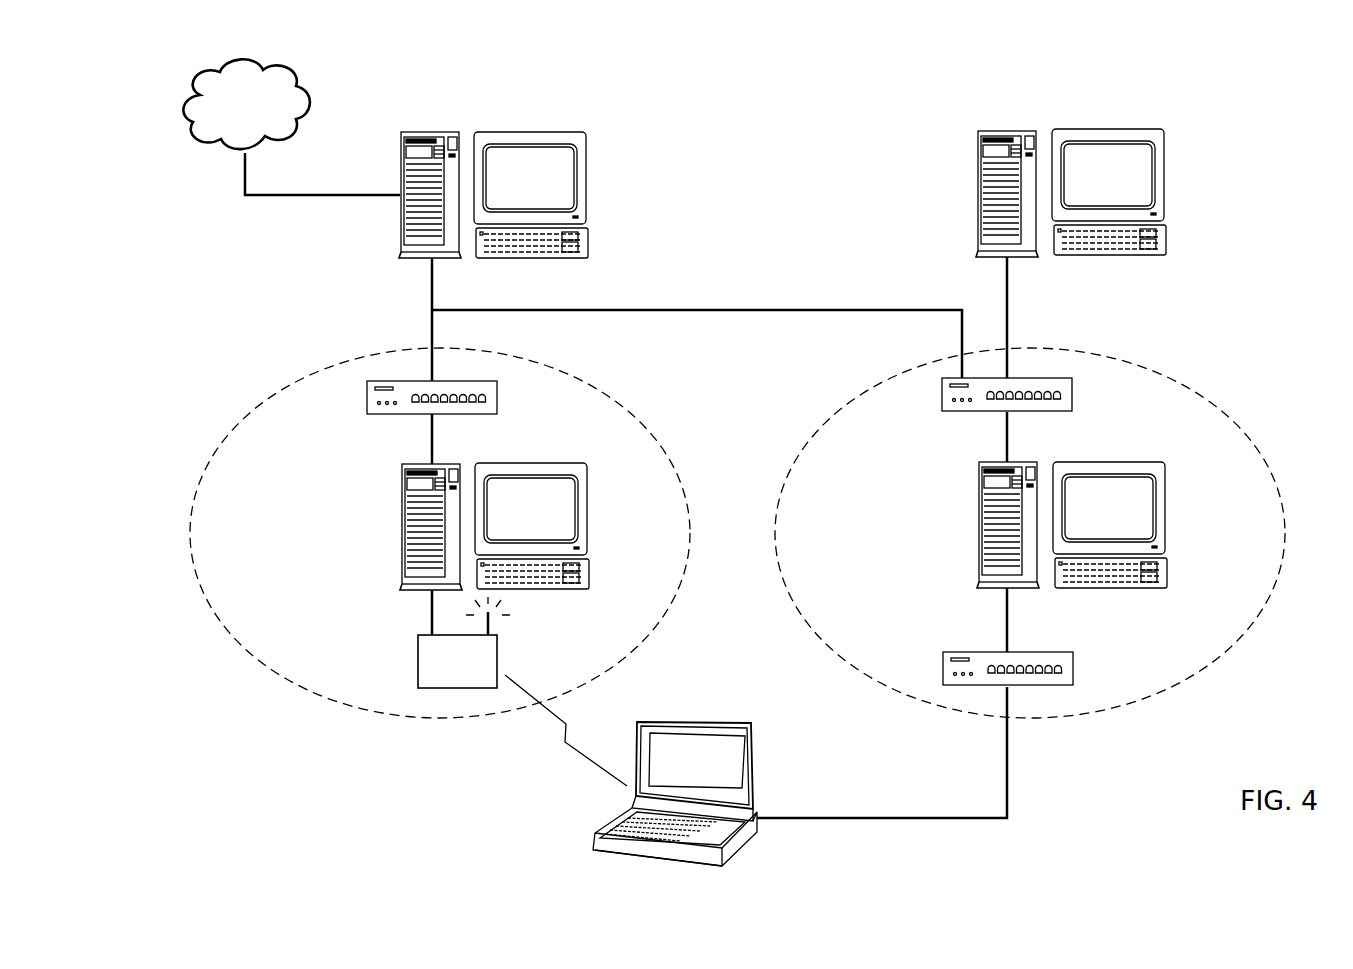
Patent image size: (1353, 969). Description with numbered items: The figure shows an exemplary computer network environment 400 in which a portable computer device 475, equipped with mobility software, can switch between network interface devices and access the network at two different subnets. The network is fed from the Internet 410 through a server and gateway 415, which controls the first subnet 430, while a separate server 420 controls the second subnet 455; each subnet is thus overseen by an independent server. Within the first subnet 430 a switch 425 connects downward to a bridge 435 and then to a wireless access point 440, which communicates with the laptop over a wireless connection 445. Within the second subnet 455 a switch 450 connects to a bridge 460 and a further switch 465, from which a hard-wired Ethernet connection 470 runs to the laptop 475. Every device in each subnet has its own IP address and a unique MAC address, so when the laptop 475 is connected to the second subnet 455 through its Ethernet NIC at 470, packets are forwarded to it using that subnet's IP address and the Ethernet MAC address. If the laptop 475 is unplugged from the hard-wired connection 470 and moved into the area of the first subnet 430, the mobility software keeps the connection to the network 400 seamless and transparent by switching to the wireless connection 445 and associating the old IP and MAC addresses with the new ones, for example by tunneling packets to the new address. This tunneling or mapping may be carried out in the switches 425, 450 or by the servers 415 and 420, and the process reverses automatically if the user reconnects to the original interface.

The computer network environment 400 is at (1248, 106).
The Internet 410 is at (305, 86).
The server and gateway 415 is at (398, 225).
The server 420 is at (975, 185).
The switch 425 is at (367, 396).
The subnet 1 430 is at (641, 422).
The bridge 435 is at (400, 530).
The wireless access point 440 is at (497, 658).
The wireless connection 445 is at (505, 760).
The switch 450 is at (942, 393).
The subnet 2 455 is at (1236, 420).
The bridge 460 is at (977, 530).
The switch 465 is at (943, 672).
The hard-wired Ethernet connection 470 is at (903, 820).
The portable computer device 475 is at (708, 862).